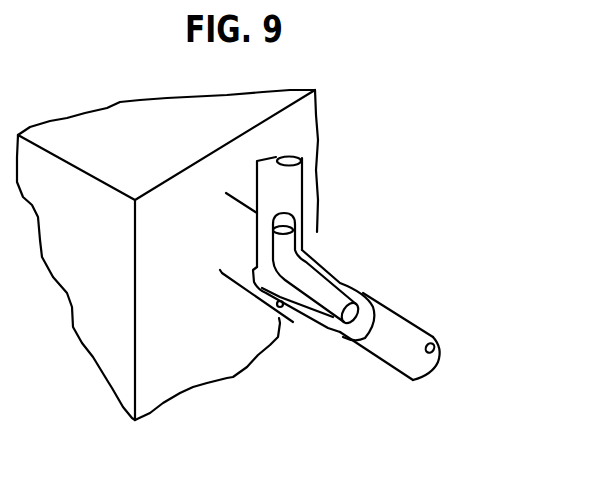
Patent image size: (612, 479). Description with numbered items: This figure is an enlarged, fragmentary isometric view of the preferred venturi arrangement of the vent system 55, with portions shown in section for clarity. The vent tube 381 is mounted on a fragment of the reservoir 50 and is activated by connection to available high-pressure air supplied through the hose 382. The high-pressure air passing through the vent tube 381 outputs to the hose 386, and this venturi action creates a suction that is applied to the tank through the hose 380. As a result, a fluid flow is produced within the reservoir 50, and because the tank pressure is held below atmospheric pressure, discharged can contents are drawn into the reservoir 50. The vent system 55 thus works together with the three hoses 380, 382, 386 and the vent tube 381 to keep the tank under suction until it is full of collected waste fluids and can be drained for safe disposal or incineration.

The reservoir 50 is at (175, 103).
The vent system 55 is at (509, 190).
The hose 380 is at (226, 193).
The vent tube 381 is at (312, 290).
The hose 382 is at (287, 195).
The hose 386 is at (407, 323).